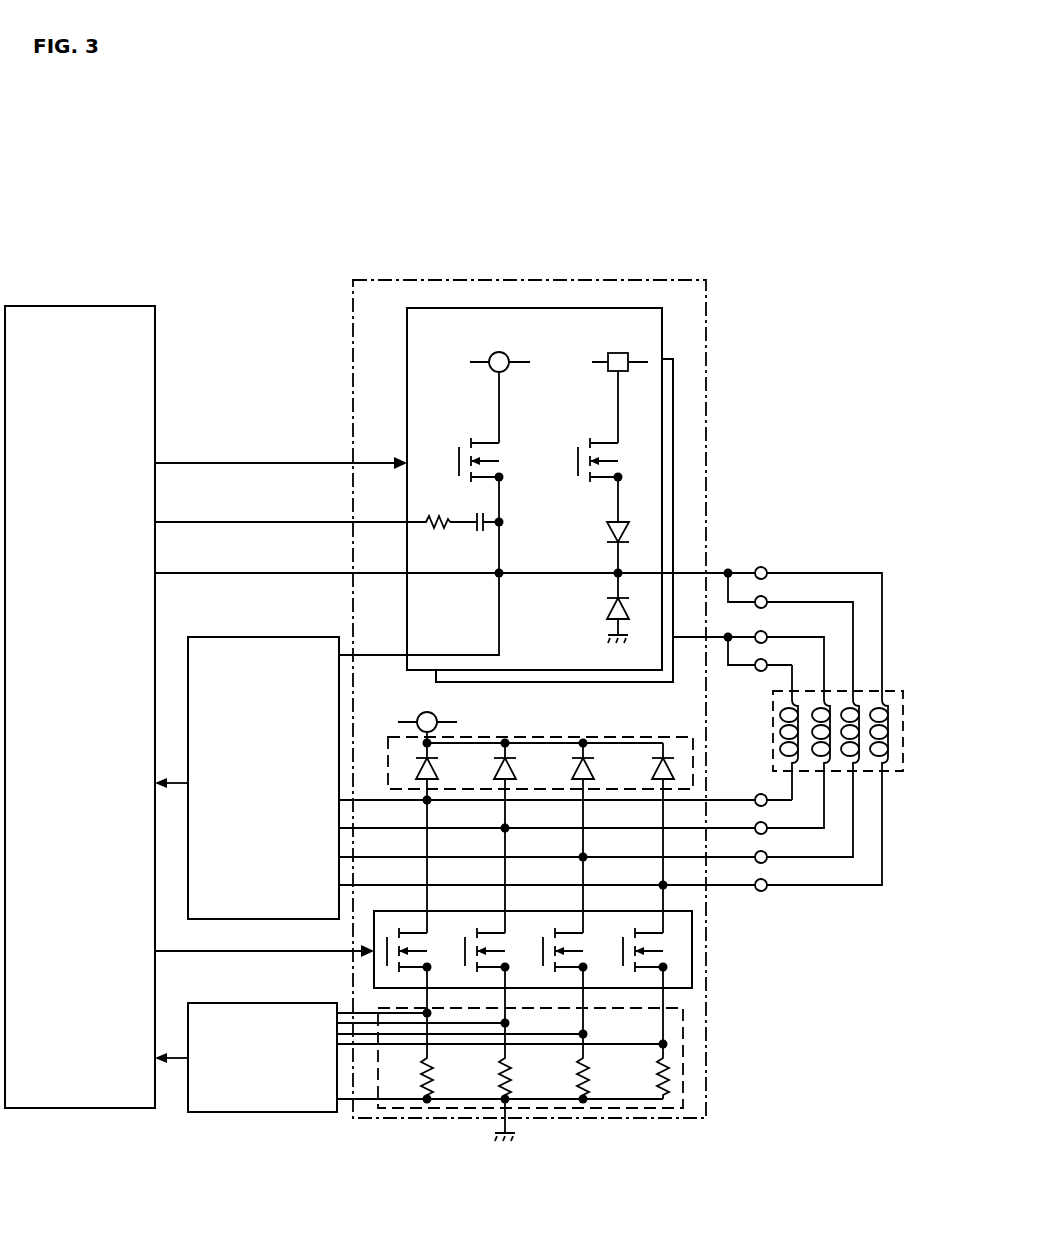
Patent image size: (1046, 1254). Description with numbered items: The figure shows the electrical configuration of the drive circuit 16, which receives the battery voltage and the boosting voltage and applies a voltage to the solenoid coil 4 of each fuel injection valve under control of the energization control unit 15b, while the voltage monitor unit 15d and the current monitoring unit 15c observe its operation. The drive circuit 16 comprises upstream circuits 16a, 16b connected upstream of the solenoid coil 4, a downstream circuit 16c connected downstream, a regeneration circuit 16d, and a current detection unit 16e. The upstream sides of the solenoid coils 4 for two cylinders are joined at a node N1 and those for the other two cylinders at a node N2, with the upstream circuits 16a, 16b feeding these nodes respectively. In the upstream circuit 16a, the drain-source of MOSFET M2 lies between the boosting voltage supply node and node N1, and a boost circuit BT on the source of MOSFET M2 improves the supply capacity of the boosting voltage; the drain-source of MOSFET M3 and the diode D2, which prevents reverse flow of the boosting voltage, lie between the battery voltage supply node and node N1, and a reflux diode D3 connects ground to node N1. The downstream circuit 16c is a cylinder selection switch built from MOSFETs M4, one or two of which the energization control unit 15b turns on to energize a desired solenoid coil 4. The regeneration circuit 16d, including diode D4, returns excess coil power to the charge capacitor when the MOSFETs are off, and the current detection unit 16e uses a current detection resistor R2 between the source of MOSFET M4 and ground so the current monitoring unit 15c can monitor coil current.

The energization control unit 15b is at (112, 306).
The current monitoring unit 15c is at (270, 1112).
The voltage monitor unit 15d is at (277, 637).
The drive circuit 16 is at (706, 455).
The upstream circuit 16a is at (663, 328).
The upstream circuit 16b is at (673, 388).
The downstream circuit 16c is at (570, 945).
The regeneration circuit 16d is at (540, 738).
The current detection unit 16e is at (573, 1056).
The solenoid coil 4 is at (885, 772).
The MOSFET M2 is at (487, 441).
The MOSFET M3 is at (605, 441).
The MOSFET M4 is at (666, 942).
The diode D2 is at (606, 532).
The reflux diode D3 is at (607, 625).
The diode D4 is at (517, 758).
The current detection resistor R2 is at (668, 1070).
The boost circuit BT is at (458, 510).
The node N1 is at (730, 568).
The node N2 is at (728, 645).